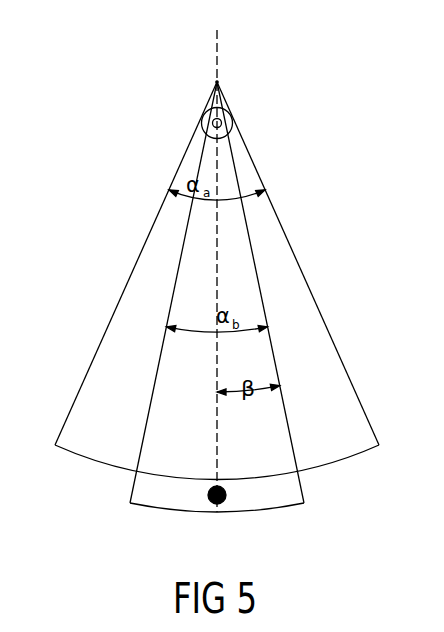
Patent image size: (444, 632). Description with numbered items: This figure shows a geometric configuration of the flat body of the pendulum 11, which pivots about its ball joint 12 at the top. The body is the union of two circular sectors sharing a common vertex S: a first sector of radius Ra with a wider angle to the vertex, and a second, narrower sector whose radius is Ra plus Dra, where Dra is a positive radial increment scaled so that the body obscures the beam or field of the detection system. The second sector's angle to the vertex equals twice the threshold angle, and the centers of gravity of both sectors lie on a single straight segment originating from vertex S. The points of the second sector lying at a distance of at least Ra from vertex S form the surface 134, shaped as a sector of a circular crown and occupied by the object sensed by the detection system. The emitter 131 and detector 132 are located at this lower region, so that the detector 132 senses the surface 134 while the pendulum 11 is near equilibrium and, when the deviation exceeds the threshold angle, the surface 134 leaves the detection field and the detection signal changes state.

The vertex S is at (222, 80).
The ball joint 12 is at (232, 108).
The pendulum 11 is at (275, 271).
The radius Ra is at (136, 263).
The radial extension Dra is at (312, 492).
The surface 134 is at (278, 497).
The detector 132 is at (229, 522).
The emitter 131 is at (217, 495).